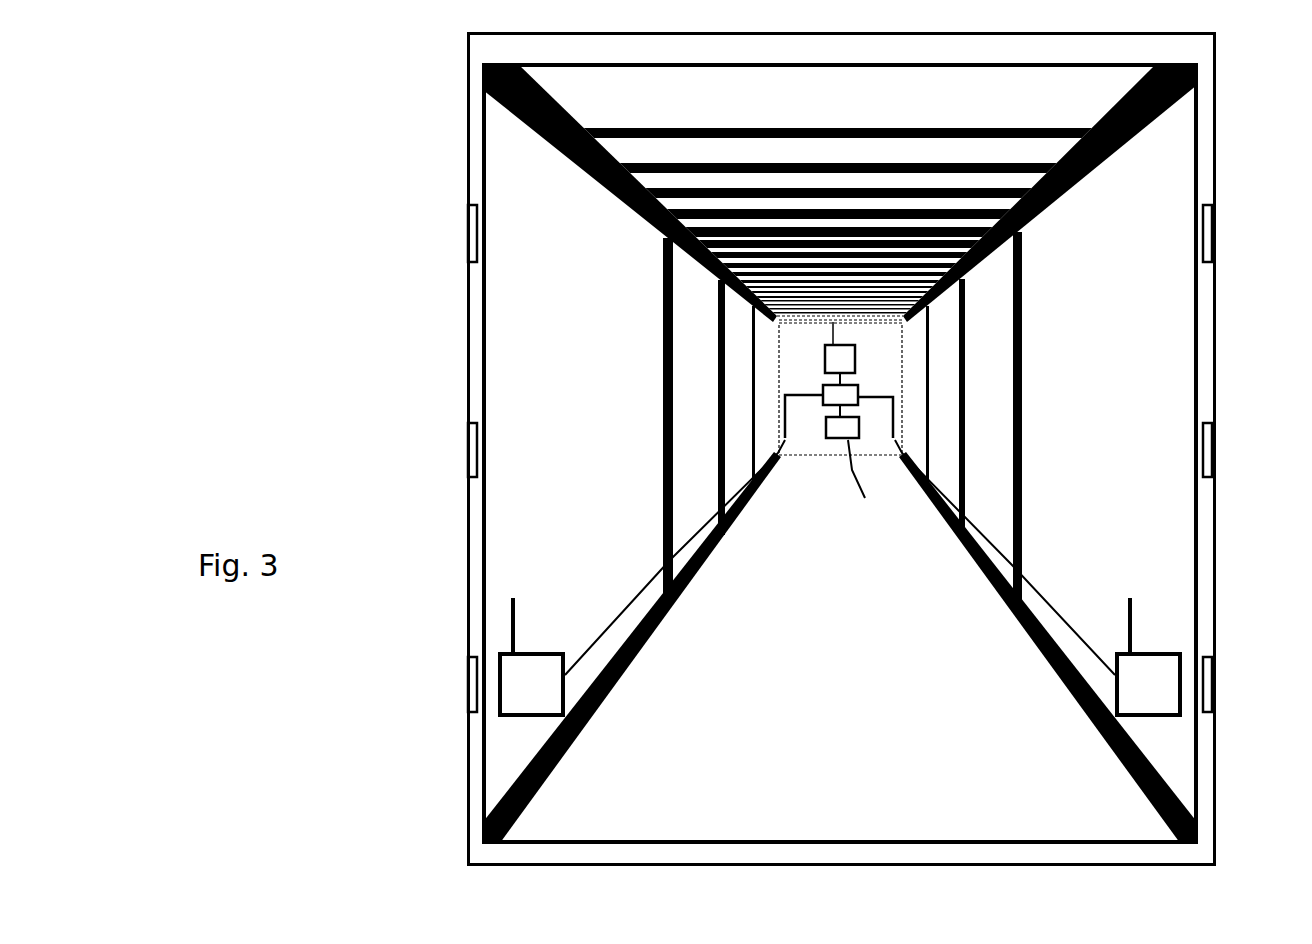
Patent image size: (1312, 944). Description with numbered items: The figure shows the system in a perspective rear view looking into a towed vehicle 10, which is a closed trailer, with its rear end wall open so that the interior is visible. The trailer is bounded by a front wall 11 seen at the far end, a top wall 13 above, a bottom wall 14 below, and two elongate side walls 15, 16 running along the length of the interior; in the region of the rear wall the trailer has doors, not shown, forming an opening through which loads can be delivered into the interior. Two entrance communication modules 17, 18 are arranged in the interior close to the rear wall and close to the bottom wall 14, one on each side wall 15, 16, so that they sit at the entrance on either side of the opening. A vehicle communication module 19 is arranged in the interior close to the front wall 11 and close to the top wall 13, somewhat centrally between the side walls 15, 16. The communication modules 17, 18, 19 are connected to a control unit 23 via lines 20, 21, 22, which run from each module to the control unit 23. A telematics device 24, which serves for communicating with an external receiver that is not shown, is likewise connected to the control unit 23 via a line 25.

The towed vehicle 10 is at (388, 221).
The front wall 11 is at (1032, 366).
The top wall 13 is at (803, 112).
The bottom wall 14 is at (822, 694).
The side wall 15 is at (1105, 437).
The side wall 16 is at (584, 404).
The entrance communication module 17 is at (1210, 681).
The entrance communication module 18 is at (466, 684).
The vehicle communication module 19 is at (1060, 353).
The line 20 is at (603, 338).
The line 21 is at (1101, 557).
The line 22 is at (576, 557).
The control unit 23 is at (1063, 458).
The telematics device 24 is at (1077, 517).
The line 25 is at (623, 390).